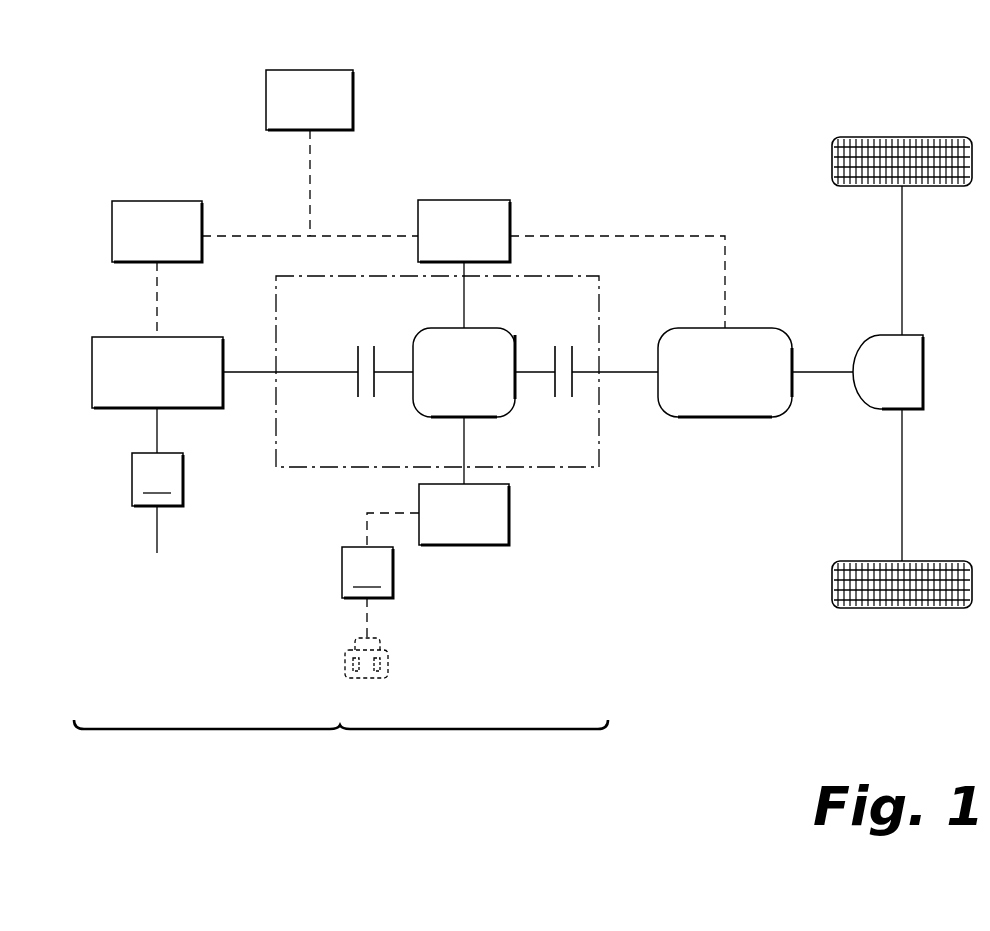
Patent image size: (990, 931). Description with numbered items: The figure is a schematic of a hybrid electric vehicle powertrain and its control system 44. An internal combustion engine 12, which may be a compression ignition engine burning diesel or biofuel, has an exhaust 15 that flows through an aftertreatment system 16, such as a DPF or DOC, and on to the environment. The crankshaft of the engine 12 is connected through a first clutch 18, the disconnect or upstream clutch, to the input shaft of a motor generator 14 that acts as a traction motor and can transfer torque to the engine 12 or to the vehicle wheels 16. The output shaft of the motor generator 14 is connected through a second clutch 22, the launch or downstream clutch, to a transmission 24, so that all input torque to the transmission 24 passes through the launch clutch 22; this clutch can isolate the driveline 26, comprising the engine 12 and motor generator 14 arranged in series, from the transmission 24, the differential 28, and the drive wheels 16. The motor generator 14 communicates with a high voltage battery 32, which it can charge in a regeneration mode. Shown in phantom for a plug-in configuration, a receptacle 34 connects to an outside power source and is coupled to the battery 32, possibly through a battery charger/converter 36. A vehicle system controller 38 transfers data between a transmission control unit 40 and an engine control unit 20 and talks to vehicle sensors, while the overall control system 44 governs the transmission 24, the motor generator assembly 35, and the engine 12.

The internal combustion engine 12 is at (92, 372).
The motor generator 14 is at (480, 326).
The exhaust 15 is at (157, 430).
The vehicle wheels 16 is at (902, 137).
The first clutch 18 is at (355, 386).
The engine control unit (ECU) 20 is at (112, 230).
The second clutch 22 is at (575, 387).
The transmission 24 is at (743, 328).
The driveline 26 is at (341, 744).
The differential 28 is at (923, 372).
The battery 32 is at (463, 545).
The receptacle 34 is at (345, 664).
The motor generator assembly 35 is at (553, 468).
The battery charger/converter 36 is at (367, 572).
The vehicle system controller 38 is at (310, 70).
The transmission control unit 40 is at (464, 200).
The control system 44 is at (437, 119).